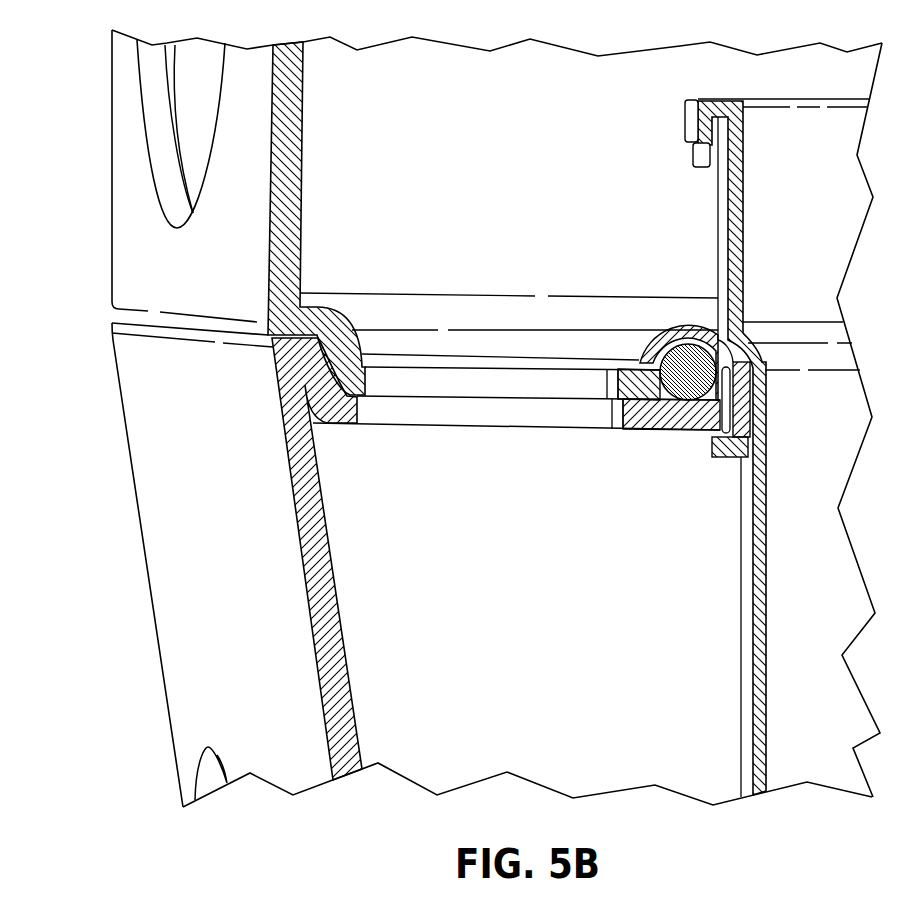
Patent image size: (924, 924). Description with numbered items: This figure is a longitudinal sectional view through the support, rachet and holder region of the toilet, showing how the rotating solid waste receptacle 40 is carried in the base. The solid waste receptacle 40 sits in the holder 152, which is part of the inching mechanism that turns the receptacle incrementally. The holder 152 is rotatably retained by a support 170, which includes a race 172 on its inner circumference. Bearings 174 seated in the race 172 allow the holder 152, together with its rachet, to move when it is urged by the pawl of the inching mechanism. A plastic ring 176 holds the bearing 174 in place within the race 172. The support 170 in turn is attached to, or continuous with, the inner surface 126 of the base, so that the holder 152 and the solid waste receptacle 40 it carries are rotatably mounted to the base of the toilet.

The solid waste receptacle 40 is at (807, 125).
The inner surface 126 is at (320, 473).
The holder 152 is at (727, 457).
The support 170 is at (465, 415).
The race 172 is at (665, 393).
The bearings 174 is at (688, 355).
The plastic ring 176 is at (660, 343).